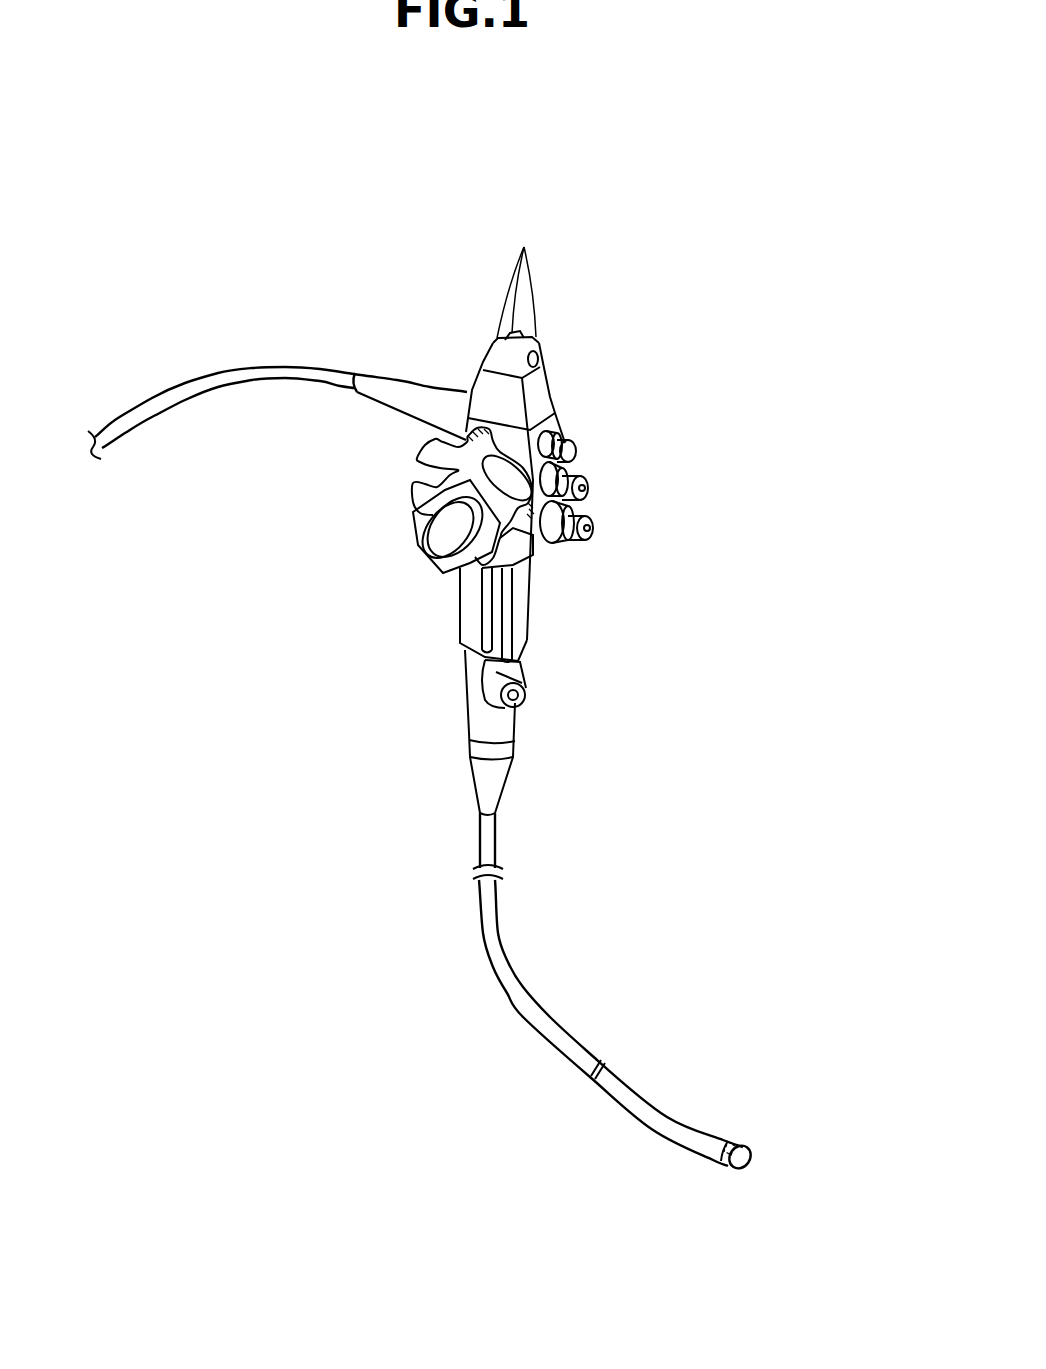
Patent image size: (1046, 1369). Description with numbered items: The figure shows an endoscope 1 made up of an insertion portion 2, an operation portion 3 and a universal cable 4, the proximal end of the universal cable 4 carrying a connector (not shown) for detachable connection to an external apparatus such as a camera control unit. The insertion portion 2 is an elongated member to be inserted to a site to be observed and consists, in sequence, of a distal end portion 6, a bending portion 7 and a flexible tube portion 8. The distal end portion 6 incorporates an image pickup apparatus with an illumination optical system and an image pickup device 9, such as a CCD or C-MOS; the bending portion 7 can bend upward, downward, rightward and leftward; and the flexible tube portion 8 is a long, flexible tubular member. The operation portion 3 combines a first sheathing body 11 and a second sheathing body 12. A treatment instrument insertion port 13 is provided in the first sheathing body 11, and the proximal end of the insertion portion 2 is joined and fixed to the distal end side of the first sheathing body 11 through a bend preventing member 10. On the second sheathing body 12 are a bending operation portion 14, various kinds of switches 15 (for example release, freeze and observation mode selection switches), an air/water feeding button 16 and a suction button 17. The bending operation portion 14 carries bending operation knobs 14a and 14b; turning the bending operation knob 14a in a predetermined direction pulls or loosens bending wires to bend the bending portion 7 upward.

The endoscope 1 is at (346, 269).
The insertion portion 2 is at (458, 1143).
The operation portion 3 is at (760, 325).
The universal cable 4 is at (141, 409).
The distal end portion 6 is at (728, 1163).
The bending portion 7 is at (613, 1090).
The flexible tube portion 8 is at (510, 997).
The image pickup device 9 is at (733, 1140).
The bend preventing member 10 is at (492, 773).
The first sheathing body 11 is at (527, 578).
The second sheathing body 12 is at (513, 447).
The treatment instrument insertion port 13 is at (526, 672).
The bending operation portion 14 is at (293, 438).
The bending operation knob 14a is at (417, 459).
The bending operation knob 14b is at (413, 502).
The various kinds of switches 15 is at (574, 440).
The air/water feeding button 16 is at (580, 545).
The suction button 17 is at (588, 474).